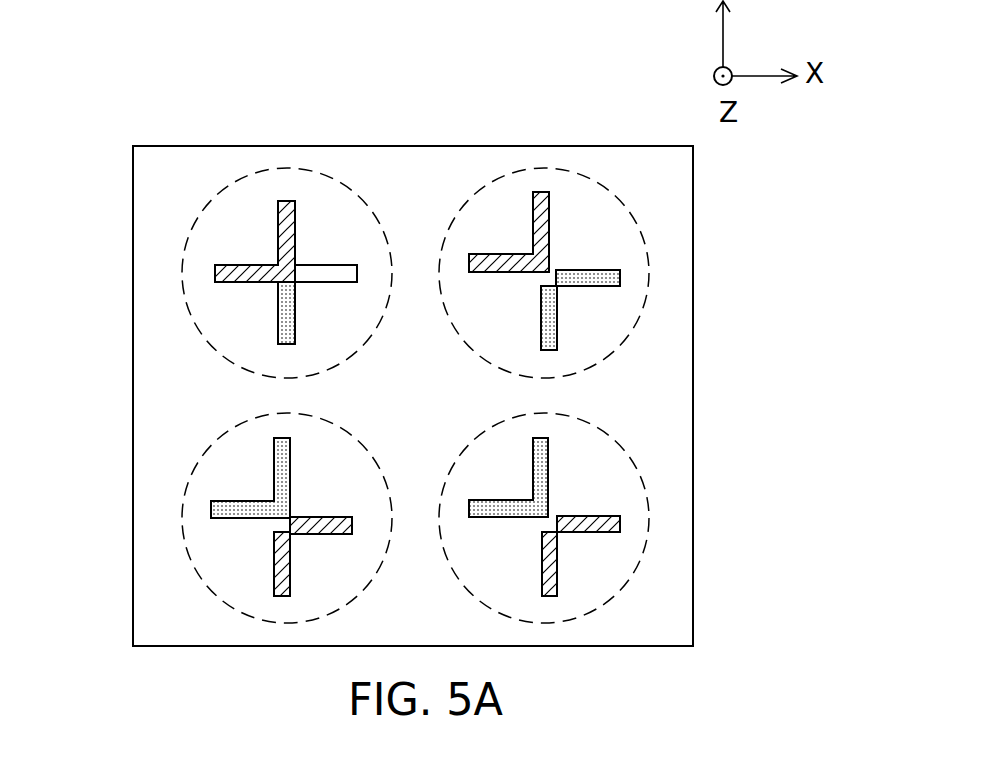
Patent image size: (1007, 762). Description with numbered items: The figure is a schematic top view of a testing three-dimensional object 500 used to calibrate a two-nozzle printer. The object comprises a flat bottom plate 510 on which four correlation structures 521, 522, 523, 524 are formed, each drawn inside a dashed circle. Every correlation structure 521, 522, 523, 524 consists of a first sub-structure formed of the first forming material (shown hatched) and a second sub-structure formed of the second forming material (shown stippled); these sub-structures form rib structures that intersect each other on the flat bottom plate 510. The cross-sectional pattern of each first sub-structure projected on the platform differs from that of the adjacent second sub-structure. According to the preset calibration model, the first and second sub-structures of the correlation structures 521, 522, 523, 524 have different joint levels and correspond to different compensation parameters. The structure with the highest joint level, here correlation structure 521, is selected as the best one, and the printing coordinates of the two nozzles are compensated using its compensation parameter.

The testing three-dimensional object 500 is at (782, 695).
The flat bottom plate 510 is at (413, 146).
The correlation structure 521 is at (212, 203).
The correlation structure 522 is at (523, 168).
The correlation structure 523 is at (212, 595).
The correlation structure 524 is at (632, 582).